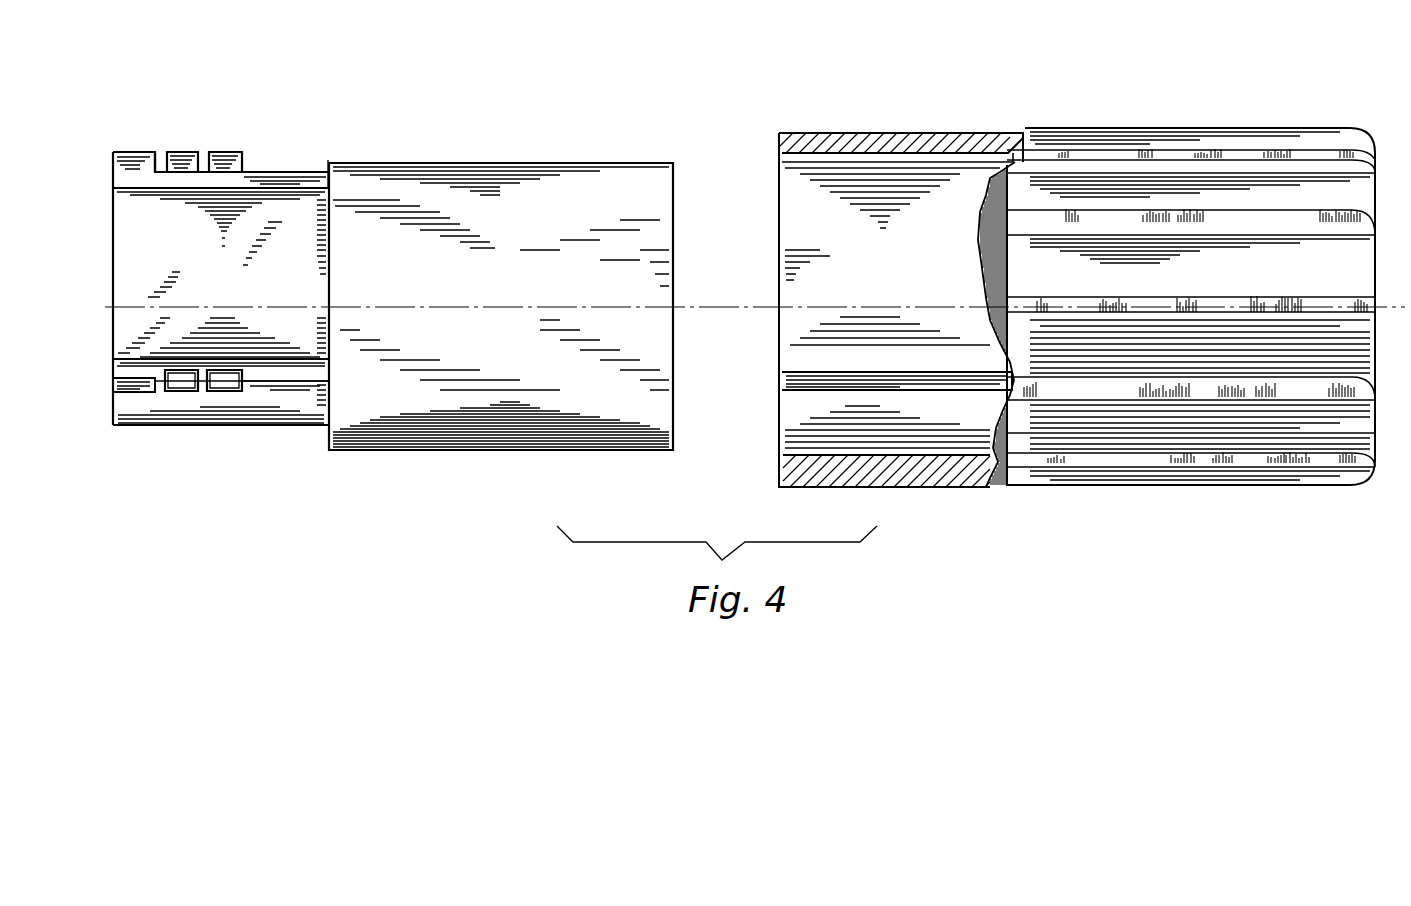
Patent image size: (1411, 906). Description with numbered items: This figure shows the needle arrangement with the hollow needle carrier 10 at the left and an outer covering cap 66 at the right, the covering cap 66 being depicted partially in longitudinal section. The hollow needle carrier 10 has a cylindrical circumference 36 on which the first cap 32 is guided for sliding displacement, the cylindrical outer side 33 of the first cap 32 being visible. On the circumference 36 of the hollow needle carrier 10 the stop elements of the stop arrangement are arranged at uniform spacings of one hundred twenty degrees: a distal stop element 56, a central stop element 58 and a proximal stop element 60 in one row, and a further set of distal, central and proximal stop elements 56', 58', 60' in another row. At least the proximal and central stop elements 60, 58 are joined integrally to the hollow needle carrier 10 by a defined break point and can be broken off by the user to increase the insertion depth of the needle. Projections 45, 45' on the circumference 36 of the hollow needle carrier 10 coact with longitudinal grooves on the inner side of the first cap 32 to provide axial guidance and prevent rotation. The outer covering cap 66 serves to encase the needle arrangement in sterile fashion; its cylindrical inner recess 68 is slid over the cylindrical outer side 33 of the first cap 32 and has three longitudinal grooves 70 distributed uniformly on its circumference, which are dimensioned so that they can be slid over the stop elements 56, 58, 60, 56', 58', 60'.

The hollow needle carrier 10 is at (178, 253).
The first cap 32 is at (546, 258).
The cylindrical outer side 33 is at (484, 451).
The cylindrical circumference 36 is at (155, 427).
The projections 45 is at (292, 151).
The projection 45' is at (298, 435).
The distal stop element 56 is at (142, 129).
The distal stop element 56' is at (122, 422).
The central stop element 58 is at (196, 129).
The central stop element 58' is at (191, 422).
The proximal stop element 60 is at (244, 138).
The proximal stop element 60' is at (242, 425).
The outer covering cap 66 is at (1130, 123).
The cylindrical inner recess 68 is at (795, 222).
The longitudinal grooves 70 is at (797, 157).